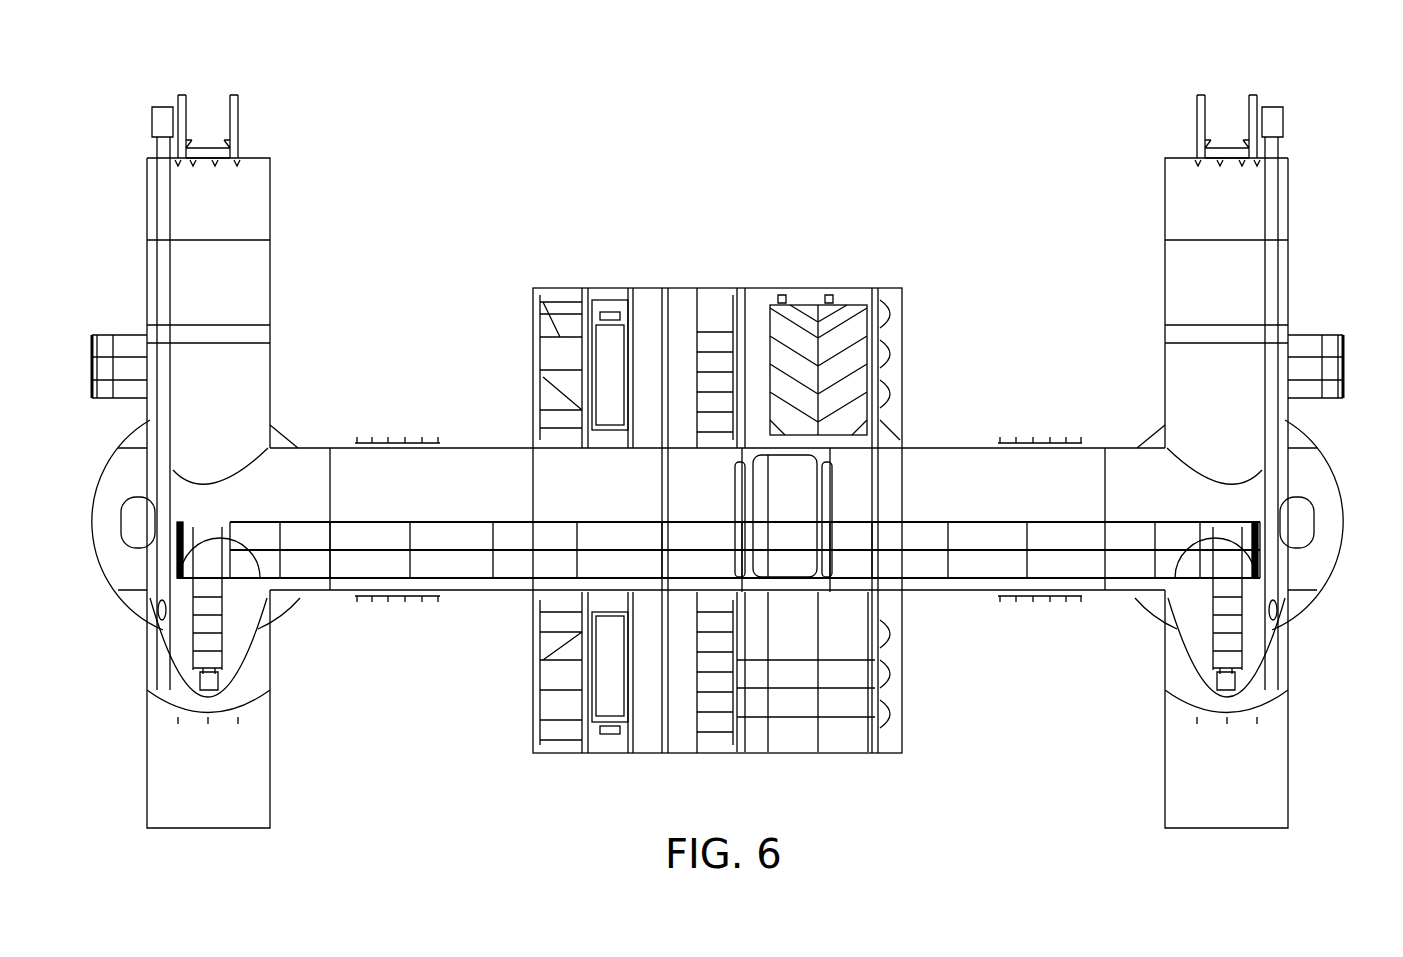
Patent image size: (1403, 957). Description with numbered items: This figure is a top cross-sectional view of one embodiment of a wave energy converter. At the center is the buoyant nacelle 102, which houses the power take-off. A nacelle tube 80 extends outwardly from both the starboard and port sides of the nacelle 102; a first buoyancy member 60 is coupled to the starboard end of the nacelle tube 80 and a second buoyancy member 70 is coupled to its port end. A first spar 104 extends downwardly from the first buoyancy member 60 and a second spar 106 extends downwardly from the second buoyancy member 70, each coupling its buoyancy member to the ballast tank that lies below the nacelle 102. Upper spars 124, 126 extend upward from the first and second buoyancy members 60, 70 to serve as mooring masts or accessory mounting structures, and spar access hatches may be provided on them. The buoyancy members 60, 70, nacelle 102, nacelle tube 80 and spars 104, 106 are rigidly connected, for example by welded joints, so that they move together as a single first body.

The first buoyancy member 60 is at (93, 524).
The second buoyancy member 70 is at (1345, 524).
The nacelle tube 80 is at (1119, 455).
The nacelle 102 is at (800, 290).
The first spar 104 is at (150, 762).
The second spar 106 is at (1287, 761).
The upper spar 124 is at (271, 199).
The upper spar 126 is at (1290, 200).